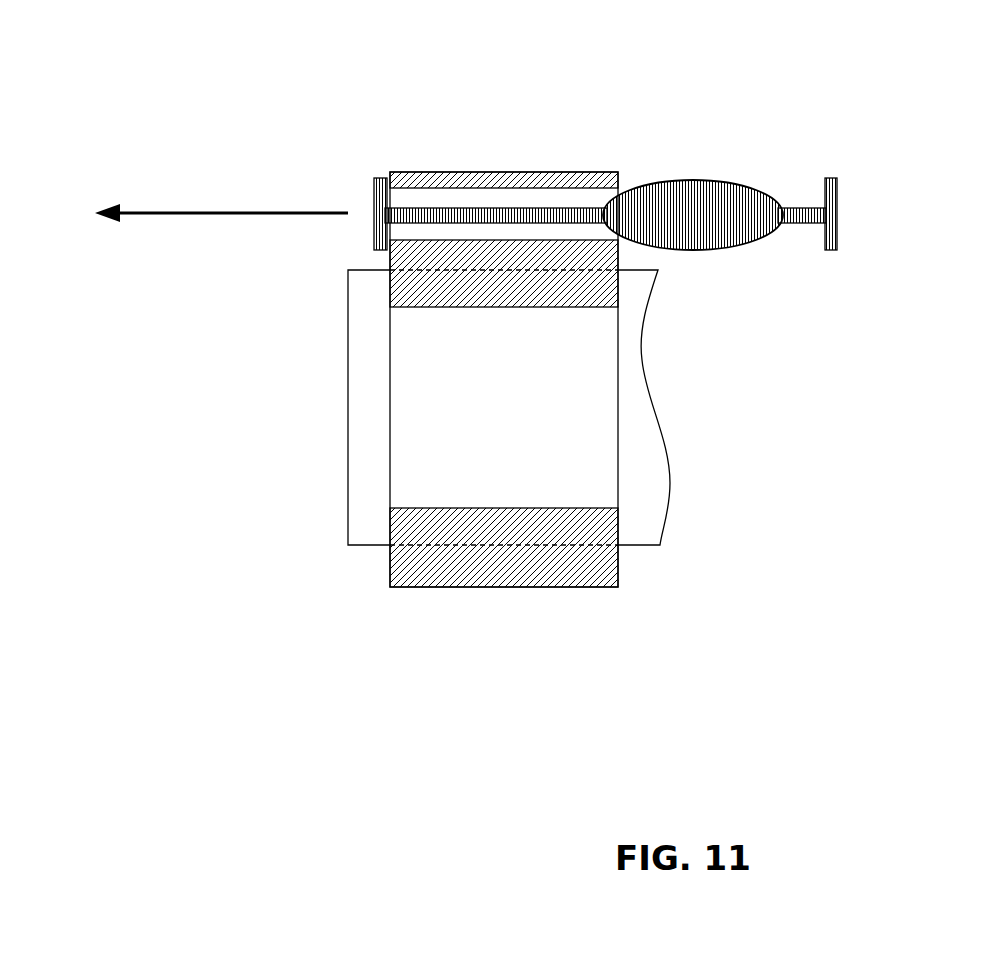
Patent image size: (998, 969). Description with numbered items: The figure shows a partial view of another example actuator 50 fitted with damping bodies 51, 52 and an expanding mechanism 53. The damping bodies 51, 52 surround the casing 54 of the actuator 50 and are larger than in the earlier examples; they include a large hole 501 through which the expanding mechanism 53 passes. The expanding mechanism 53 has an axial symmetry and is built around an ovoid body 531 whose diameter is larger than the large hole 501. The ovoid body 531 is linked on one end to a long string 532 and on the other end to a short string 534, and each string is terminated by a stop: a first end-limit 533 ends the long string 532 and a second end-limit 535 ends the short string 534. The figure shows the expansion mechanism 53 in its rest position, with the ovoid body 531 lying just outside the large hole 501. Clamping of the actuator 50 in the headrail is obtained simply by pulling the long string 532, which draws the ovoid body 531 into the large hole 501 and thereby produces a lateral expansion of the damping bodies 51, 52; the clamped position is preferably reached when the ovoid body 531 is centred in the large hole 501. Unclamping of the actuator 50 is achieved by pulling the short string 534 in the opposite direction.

The actuator 50 is at (180, 363).
The damping body 51 is at (541, 156).
The damping body 52 is at (504, 305).
The expanding mechanism 53 is at (724, 264).
The casing 54 is at (355, 412).
The large hole 501 is at (450, 197).
The ovoid body 531 is at (710, 190).
The long string 532 is at (437, 215).
The first end-limit 533 is at (375, 185).
The short string 534 is at (795, 213).
The second end-limit 535 is at (838, 185).